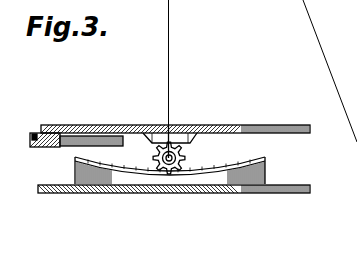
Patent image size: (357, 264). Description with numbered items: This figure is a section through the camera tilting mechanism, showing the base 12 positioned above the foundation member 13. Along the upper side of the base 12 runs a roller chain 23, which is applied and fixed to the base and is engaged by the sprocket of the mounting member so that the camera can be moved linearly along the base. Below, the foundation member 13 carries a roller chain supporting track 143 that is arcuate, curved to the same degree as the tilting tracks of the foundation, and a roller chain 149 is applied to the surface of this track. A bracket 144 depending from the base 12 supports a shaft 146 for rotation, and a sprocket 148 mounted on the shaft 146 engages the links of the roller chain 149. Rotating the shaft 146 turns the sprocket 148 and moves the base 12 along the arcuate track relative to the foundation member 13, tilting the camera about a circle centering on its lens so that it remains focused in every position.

The base 12 is at (74, 125).
The foundation member 13 is at (44, 193).
The roller chain 23 is at (27, 128).
The roller chain supporting track 143 is at (225, 177).
The bracket 144 is at (146, 125).
The shaft 146 is at (176, 133).
The sprocket 148 is at (190, 143).
The roller chain 149 is at (108, 162).